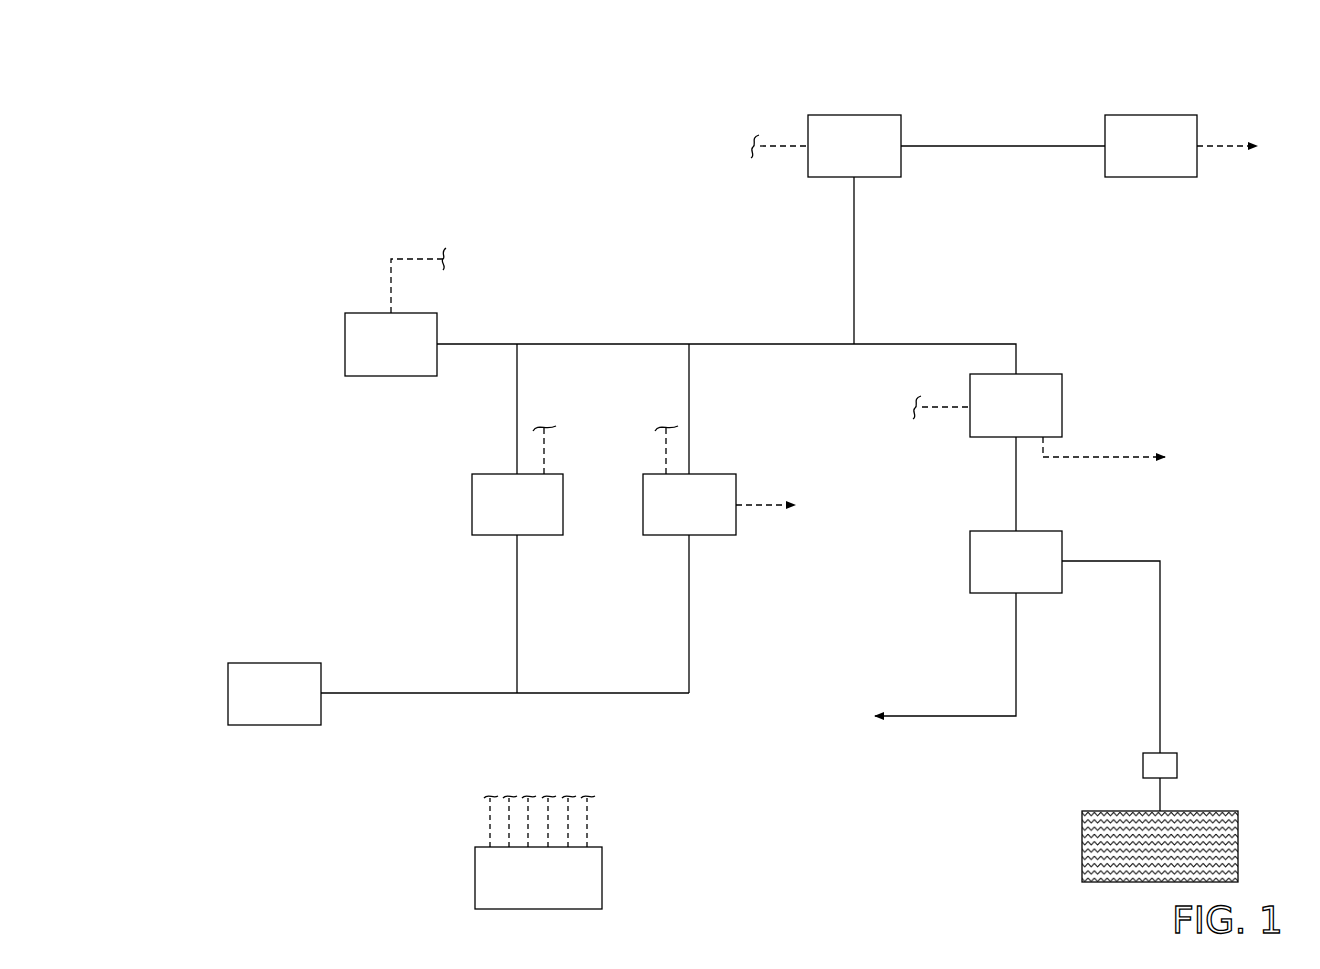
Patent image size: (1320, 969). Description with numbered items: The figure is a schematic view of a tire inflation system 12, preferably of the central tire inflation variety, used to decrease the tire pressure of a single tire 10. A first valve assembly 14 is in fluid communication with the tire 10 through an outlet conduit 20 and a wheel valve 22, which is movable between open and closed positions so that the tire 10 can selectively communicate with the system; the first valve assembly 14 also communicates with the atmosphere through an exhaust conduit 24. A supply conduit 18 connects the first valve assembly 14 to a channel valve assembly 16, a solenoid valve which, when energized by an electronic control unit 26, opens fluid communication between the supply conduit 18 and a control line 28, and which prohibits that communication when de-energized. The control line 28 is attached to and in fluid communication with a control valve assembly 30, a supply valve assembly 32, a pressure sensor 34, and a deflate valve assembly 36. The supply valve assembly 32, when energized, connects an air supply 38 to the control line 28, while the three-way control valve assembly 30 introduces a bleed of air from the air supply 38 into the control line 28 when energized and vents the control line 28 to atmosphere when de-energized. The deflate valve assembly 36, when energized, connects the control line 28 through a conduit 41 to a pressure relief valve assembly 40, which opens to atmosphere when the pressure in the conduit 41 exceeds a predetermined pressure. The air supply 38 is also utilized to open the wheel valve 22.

The tire 10 is at (1238, 846).
The tire inflation system 12 is at (358, 152).
The first valve assembly 14 is at (1062, 546).
The channel valve assembly 16 is at (1062, 406).
The supply conduit 18 is at (1016, 485).
The outlet conduit 20 is at (1159, 686).
The wheel valve 22 is at (1177, 765).
The exhaust conduit 24 is at (1016, 655).
The electronic control unit 26 is at (475, 880).
The control line 28 is at (760, 344).
The control valve assembly 30 is at (736, 488).
The supply valve assembly 32 is at (472, 508).
The pressure sensor 34 is at (345, 350).
The deflate valve assembly 36 is at (854, 115).
The air supply 38 is at (228, 697).
The pressure relief valve assembly 40 is at (1150, 115).
The conduit 41 is at (1003, 146).